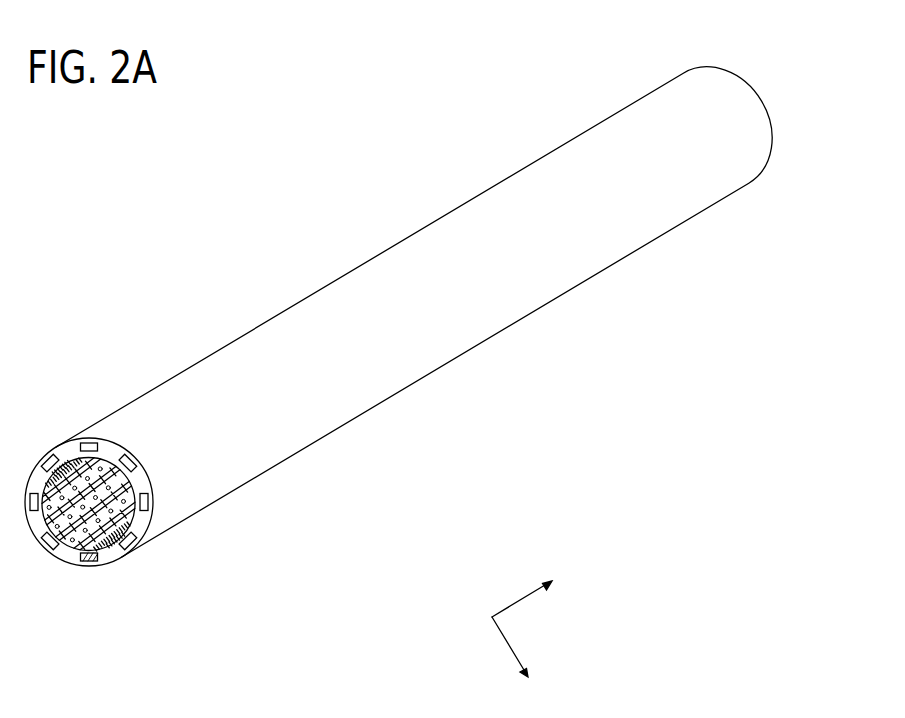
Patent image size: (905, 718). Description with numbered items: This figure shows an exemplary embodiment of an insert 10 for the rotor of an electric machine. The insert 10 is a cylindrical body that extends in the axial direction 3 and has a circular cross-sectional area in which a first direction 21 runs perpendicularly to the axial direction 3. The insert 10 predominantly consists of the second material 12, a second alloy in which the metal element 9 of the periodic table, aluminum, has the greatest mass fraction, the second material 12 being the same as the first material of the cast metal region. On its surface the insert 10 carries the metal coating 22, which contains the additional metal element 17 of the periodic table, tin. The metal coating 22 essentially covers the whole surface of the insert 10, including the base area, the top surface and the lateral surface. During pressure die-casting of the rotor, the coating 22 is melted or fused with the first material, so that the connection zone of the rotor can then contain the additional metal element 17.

The insert 10 is at (302, 230).
The metal element of the periodic table 9 is at (103, 457).
The second material 12 is at (64, 564).
The additional metal element of the periodic table 17 is at (88, 564).
The metal coating 22 is at (120, 561).
The axial direction 3 is at (513, 603).
The first direction 21 is at (500, 634).